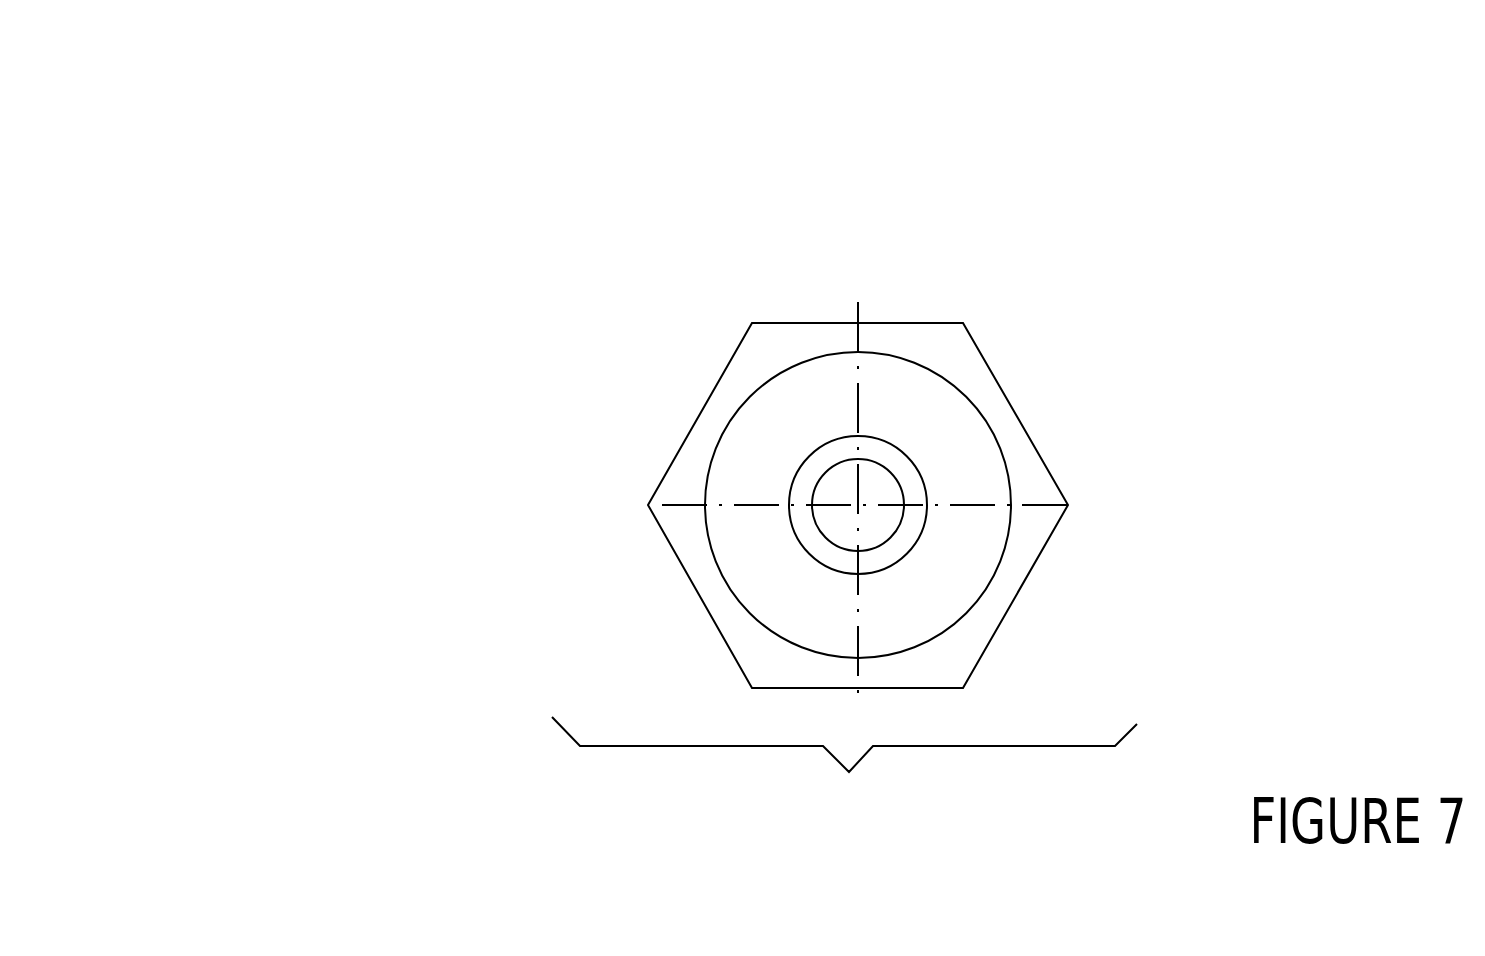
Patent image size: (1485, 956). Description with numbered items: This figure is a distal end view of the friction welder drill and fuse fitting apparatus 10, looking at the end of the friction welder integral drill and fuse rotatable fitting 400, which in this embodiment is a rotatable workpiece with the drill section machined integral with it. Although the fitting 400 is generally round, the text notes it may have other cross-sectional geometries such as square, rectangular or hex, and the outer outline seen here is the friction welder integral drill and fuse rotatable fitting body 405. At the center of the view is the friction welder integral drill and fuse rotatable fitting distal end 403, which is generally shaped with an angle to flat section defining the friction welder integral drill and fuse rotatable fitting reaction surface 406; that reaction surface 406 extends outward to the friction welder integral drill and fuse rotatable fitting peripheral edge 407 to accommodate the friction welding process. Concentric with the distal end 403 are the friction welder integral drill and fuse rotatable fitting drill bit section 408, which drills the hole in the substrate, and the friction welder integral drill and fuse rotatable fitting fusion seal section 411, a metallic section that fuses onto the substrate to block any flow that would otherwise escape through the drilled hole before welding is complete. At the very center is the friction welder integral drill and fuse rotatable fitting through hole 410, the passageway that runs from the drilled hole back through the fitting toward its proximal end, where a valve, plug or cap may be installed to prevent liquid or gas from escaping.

The friction welder drill and fuse fitting apparatus 10 is at (844, 777).
The friction welder integral drill and fuse rotatable fitting 400 is at (858, 367).
The friction welder integral drill and fuse rotatable fitting distal end 403 is at (696, 360).
The friction welder integral drill and fuse rotatable fitting body 405 is at (786, 352).
The friction welder integral drill and fuse rotatable fitting reaction surface 406 is at (538, 318).
The friction welder integral drill and fuse rotatable fitting peripheral edge 407 is at (568, 267).
The friction welder integral drill and fuse rotatable fitting drill bit section 408 is at (960, 299).
The friction welder integral drill and fuse rotatable fitting through hole 410 is at (866, 485).
The friction welder integral drill and fuse rotatable fitting fusion seal section 411 is at (1062, 310).